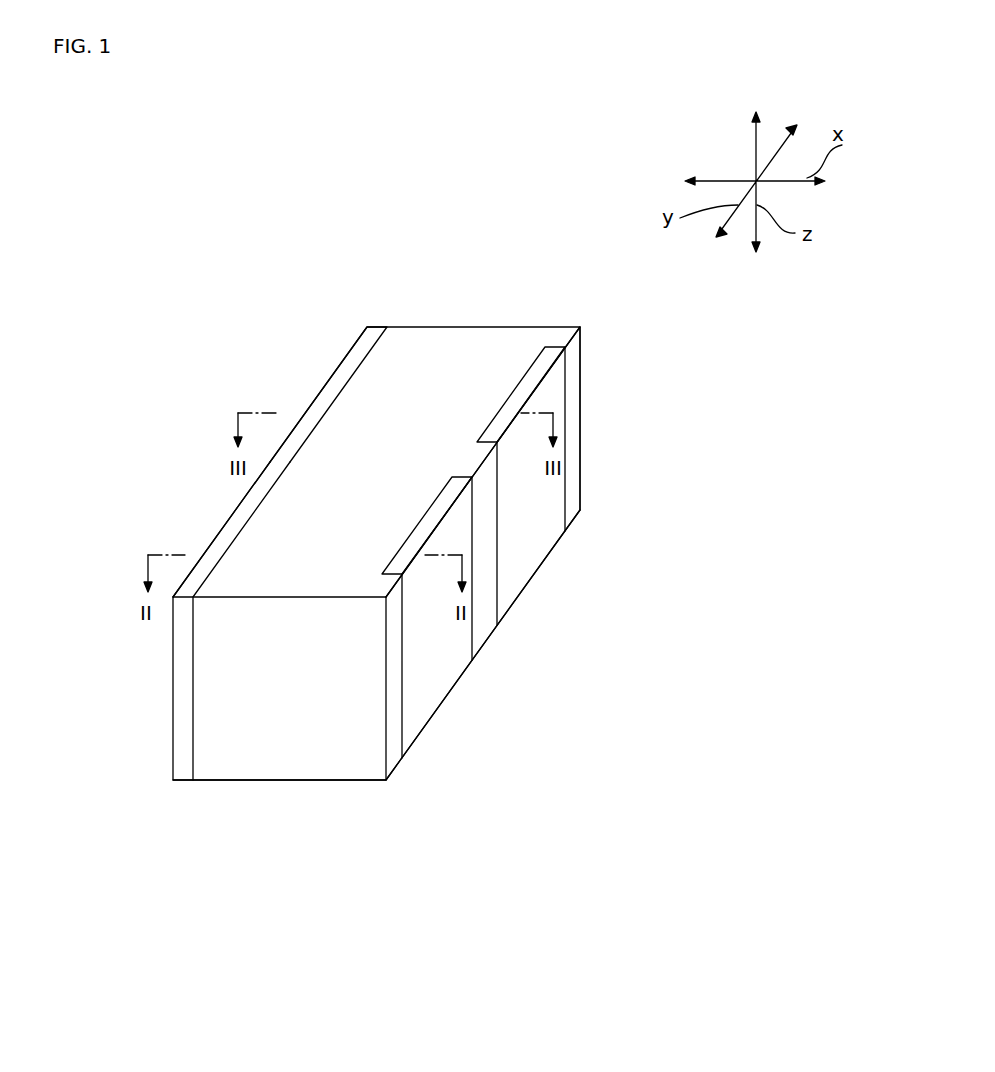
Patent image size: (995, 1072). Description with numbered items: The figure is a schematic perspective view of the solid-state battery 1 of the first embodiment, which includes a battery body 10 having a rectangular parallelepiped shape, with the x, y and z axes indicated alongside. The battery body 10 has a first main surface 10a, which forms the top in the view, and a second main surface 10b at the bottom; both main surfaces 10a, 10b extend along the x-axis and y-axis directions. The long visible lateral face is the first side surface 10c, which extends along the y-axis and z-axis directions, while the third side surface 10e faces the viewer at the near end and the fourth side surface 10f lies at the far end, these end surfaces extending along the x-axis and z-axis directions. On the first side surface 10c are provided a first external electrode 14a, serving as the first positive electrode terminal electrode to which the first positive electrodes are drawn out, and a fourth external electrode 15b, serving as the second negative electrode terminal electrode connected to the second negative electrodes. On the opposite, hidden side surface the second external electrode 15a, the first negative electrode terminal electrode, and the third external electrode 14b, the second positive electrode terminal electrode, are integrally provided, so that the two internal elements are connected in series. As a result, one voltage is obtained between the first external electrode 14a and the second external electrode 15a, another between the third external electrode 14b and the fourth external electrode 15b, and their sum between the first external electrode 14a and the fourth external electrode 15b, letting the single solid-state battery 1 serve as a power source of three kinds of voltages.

The solid-state battery 1 is at (548, 243).
The battery body 10 is at (275, 784).
The first main surface 10a is at (442, 340).
The second main surface 10b is at (332, 785).
The first side surface 10c is at (482, 613).
The third side surface 10e is at (235, 755).
The fourth side surface 10f is at (580, 405).
The first external electrode 14a is at (430, 690).
The third external electrode 14b is at (330, 372).
The second external electrode 15a is at (207, 545).
The fourth external electrode 15b is at (545, 520).